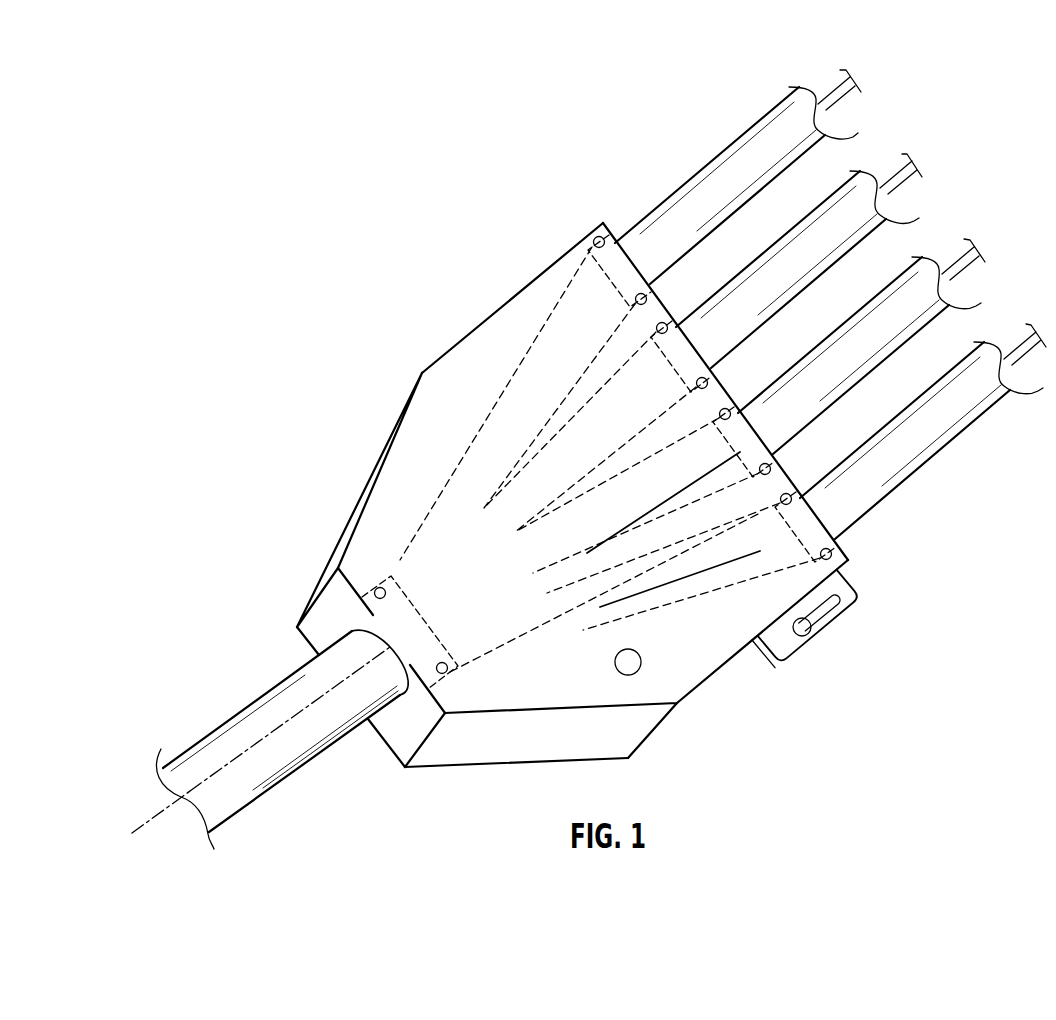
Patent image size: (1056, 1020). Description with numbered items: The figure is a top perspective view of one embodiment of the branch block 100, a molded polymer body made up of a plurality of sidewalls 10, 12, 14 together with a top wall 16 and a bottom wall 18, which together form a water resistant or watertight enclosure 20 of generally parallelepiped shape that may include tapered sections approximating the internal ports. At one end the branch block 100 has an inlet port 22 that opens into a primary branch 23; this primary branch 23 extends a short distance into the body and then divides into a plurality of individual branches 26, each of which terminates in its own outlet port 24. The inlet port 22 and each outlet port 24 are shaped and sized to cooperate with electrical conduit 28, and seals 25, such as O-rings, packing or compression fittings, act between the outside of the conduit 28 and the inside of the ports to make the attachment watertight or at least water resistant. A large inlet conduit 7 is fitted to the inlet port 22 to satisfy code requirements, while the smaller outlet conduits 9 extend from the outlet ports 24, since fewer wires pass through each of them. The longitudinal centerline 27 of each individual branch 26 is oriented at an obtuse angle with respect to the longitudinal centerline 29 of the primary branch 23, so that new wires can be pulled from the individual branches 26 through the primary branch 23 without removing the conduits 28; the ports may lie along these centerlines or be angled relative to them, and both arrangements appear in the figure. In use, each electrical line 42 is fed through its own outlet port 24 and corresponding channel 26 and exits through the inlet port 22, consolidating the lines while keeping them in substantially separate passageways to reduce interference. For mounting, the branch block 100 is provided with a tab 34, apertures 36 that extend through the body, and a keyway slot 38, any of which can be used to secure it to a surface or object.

The branch block 100 is at (395, 216).
The inlet conduit 7 is at (233, 728).
The outlet conduit 9 is at (793, 262).
The sidewall 10 is at (297, 630).
The sidewall 12 is at (667, 310).
The sidewall 14 is at (360, 477).
The top wall 16 is at (700, 635).
The bottom wall 18 is at (460, 770).
The enclosure 20 is at (447, 392).
The inlet port 22 is at (393, 700).
The primary branch 23 is at (378, 588).
The outlet port 24 is at (617, 246).
The seal 25 is at (599, 240).
The individual branch 26 is at (557, 363).
The longitudinal centerline 27 is at (778, 430).
The electrical conduit 28 is at (738, 168).
The longitudinal centerline 29 is at (293, 730).
The tab 34 is at (847, 620).
The aperture 36 is at (647, 673).
The keyway slot 38 is at (830, 632).
The electrical line 42 is at (142, 818).